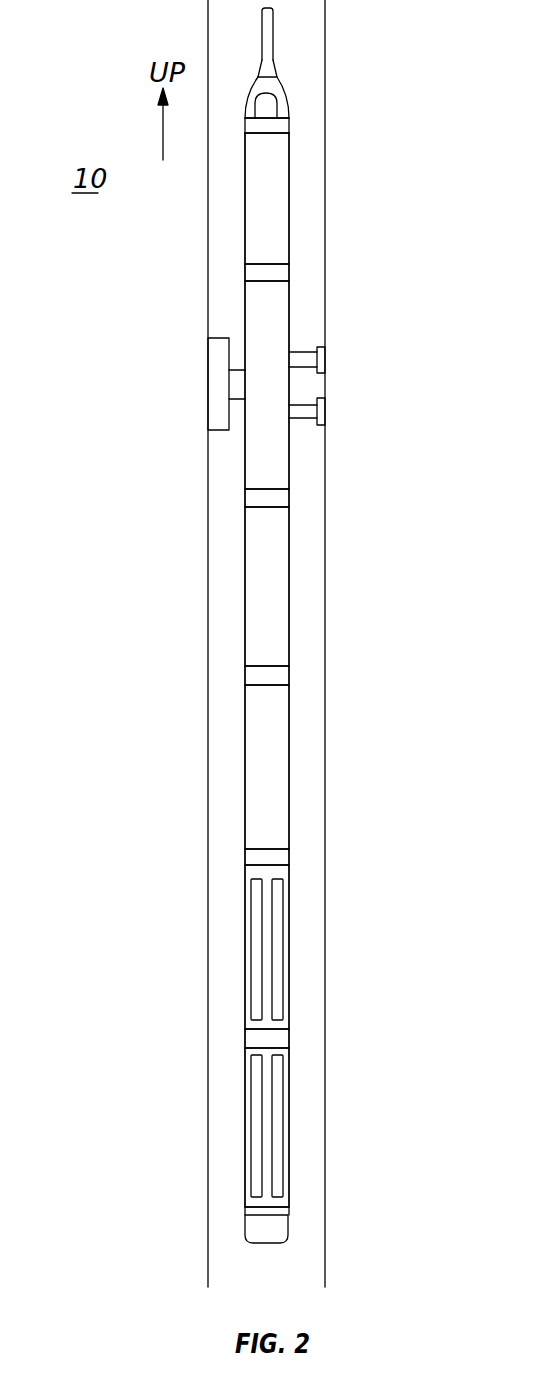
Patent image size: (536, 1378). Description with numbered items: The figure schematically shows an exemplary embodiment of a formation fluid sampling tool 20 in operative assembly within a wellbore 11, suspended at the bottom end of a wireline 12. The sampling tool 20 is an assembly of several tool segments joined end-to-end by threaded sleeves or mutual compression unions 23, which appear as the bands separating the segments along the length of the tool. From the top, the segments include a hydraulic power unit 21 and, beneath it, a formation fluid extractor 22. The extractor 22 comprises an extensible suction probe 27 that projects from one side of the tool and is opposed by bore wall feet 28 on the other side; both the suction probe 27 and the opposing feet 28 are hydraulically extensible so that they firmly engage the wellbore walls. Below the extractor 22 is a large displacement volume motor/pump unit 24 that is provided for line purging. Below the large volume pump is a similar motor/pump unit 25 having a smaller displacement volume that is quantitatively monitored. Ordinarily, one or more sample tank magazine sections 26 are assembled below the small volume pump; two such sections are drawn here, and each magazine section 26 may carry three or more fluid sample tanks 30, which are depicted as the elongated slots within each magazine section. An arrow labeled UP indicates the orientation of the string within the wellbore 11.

The wellbore penetration 11 is at (206, 476).
The wireline 12 is at (266, 43).
The formation fluid sampling tool 20 is at (288, 300).
The hydraulic power unit 21 is at (283, 163).
The formation fluid extractor 22 is at (283, 462).
The threaded sleeves or mutual compression unions 23 is at (283, 272).
The large displacement volume motor/pump unit 24 is at (283, 570).
The motor/pump unit having a smaller displacement volume 25 is at (283, 760).
The sample tank magazine section 26 is at (267, 935).
The extensible suction probe 27 is at (208, 375).
The bore wall feet 28 is at (324, 403).
The fluid sample tanks 30 is at (270, 962).